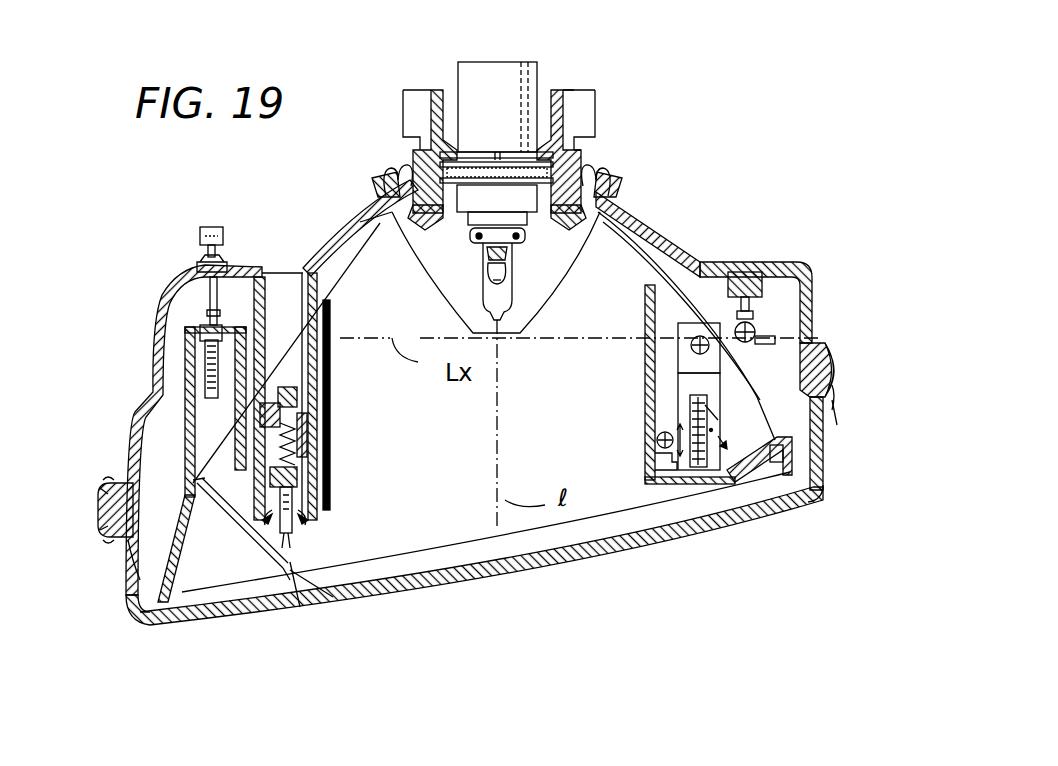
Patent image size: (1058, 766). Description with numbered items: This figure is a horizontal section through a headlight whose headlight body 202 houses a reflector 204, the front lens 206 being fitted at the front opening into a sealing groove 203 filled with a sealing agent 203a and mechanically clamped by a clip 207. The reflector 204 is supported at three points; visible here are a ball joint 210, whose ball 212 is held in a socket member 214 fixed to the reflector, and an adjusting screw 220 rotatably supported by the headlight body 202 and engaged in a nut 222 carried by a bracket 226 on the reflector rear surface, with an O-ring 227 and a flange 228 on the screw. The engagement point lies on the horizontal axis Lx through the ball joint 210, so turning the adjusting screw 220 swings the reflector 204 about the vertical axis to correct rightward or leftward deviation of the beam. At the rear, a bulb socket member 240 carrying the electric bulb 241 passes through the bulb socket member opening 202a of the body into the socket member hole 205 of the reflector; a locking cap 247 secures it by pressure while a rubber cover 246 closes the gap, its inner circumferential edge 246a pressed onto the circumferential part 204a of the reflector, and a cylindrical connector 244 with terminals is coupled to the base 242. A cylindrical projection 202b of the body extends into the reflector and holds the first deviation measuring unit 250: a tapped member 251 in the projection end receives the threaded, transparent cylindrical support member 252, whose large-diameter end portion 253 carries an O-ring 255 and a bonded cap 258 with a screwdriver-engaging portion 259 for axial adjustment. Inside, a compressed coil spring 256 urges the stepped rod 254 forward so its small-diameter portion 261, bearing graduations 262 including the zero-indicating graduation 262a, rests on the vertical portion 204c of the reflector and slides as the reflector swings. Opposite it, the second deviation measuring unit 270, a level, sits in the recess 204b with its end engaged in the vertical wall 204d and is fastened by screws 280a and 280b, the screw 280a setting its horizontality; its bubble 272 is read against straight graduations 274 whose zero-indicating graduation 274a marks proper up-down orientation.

The headlight body 202 is at (652, 238).
The bulb socket member opening 202a is at (612, 180).
The cylindrical projection 202b is at (300, 282).
The sealing groove 203 is at (803, 397).
The sealing agent 203a is at (832, 387).
The reflector 204 is at (707, 272).
The circumferential part of the reflector rear portion 204a is at (350, 218).
The recess 204b is at (825, 463).
The vertical portion of the reflector 204c is at (300, 575).
The vertical wall of the reflector 204d is at (677, 490).
The socket member hole 205 is at (478, 214).
The front lens 206 is at (467, 592).
The clip 207 is at (62, 502).
The ball joint 210 is at (765, 303).
The ball 212 is at (760, 335).
The socket member 214 is at (818, 346).
The adjusting screw 220 is at (190, 320).
The nut 222 is at (205, 358).
The bracket 226 is at (185, 390).
The O-ring 227 is at (198, 265).
The flange 228 is at (207, 240).
The bulb socket member 240 is at (450, 84).
The electric bulb 241 is at (513, 300).
The base 242 is at (535, 230).
The cylindrical connector 244 is at (526, 62).
The rubber cover 246 is at (395, 170).
The inner circumferential edge of the rubber cover 246a is at (378, 188).
The locking cap 247 is at (566, 90).
The first deviation measuring unit 250 is at (200, 430).
The tapped member 251 is at (197, 481).
The cylindrical support member 252 is at (305, 478).
The large-diameter end portion 253 is at (130, 418).
The rod 254 is at (305, 493).
The O-ring 255 is at (307, 430).
The compressed coil spring 256 is at (297, 444).
The cap 258 is at (286, 385).
The screwdriver-engaging portion 259 is at (330, 358).
The small-diameter portion 261 is at (330, 577).
The graduations 262 is at (310, 520).
The zero-indicating graduation 262a is at (275, 575).
The second deviation measuring unit 270 is at (823, 490).
The bubble 272 is at (727, 470).
The straight graduations 274 is at (745, 420).
The zero-indicating graduation 274a is at (688, 416).
The screw 280a is at (683, 342).
The screw 280b is at (657, 440).